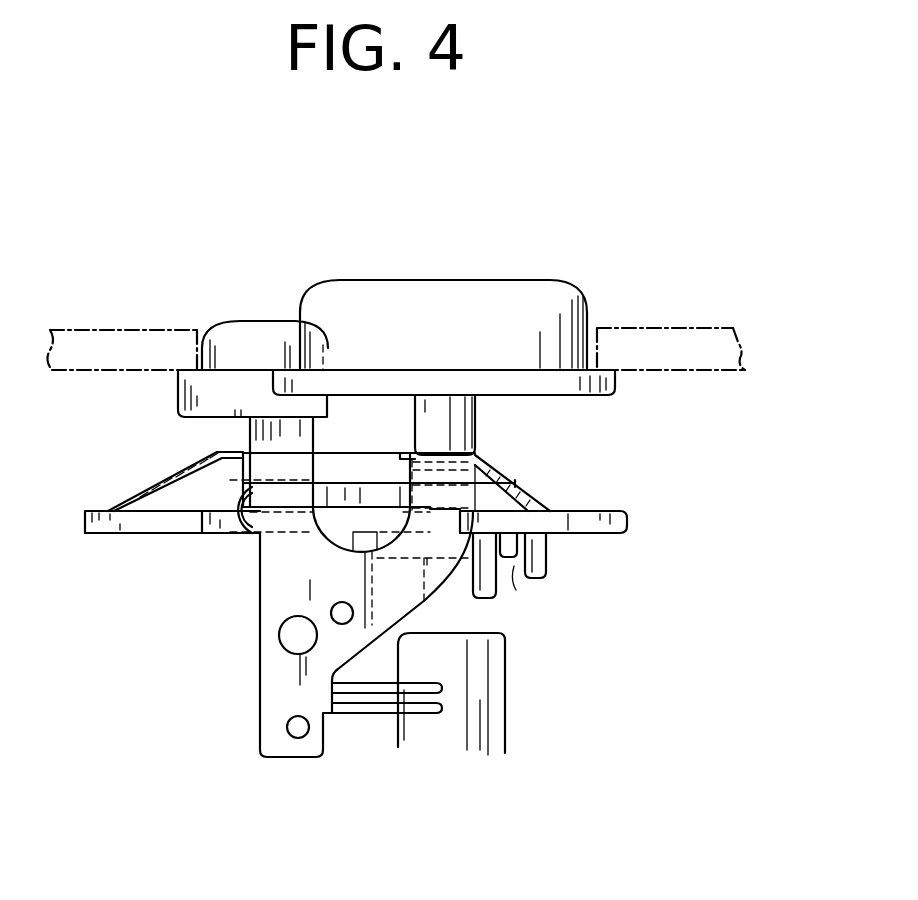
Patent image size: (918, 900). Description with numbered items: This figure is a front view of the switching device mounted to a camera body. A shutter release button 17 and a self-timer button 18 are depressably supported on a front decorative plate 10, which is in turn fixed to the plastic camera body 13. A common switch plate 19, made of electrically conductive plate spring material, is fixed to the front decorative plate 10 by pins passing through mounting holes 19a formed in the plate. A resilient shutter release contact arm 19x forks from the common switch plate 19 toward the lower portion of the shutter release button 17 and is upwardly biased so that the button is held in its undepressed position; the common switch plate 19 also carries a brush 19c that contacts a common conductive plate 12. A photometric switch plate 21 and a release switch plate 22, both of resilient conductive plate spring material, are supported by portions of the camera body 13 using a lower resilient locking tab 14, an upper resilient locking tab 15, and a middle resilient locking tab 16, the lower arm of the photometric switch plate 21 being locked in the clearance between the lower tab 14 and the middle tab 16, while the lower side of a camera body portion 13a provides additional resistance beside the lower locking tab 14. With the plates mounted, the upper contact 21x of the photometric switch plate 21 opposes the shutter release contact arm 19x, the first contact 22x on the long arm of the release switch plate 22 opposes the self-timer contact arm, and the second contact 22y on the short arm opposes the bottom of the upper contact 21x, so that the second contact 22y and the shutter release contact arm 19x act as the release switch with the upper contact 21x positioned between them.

The front decorative plate 10 is at (118, 298).
The common conductive plate 12 is at (503, 738).
The plastic camera body 13 is at (140, 525).
The camera body portion 13a is at (515, 581).
The lower resilient locking tab 14 is at (423, 606).
The upper resilient locking tab 15 is at (372, 497).
The middle resilient locking tab 16 is at (283, 520).
The shutter release button 17 is at (430, 295).
The self-timer button 18 is at (250, 325).
The common switch plate 19 is at (268, 738).
The mounting holes 19a is at (292, 637).
The brush 19c is at (373, 688).
The shutter release contact arm 19x is at (473, 468).
The photometric switch plate 21 is at (213, 500).
The upper contact 21x is at (487, 487).
The release switch plate 22 is at (533, 500).
The first contact 22x is at (271, 442).
The second contact 22y is at (517, 500).